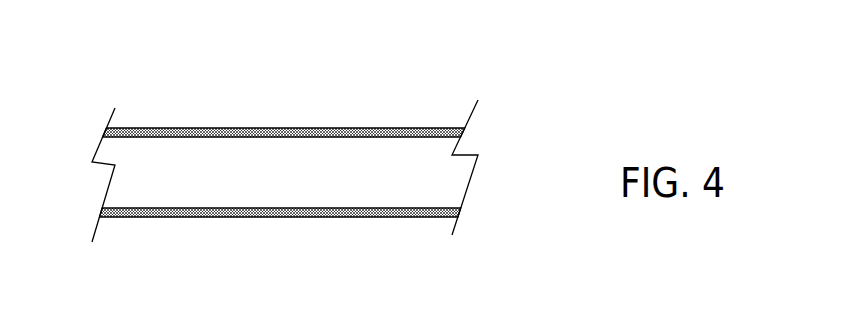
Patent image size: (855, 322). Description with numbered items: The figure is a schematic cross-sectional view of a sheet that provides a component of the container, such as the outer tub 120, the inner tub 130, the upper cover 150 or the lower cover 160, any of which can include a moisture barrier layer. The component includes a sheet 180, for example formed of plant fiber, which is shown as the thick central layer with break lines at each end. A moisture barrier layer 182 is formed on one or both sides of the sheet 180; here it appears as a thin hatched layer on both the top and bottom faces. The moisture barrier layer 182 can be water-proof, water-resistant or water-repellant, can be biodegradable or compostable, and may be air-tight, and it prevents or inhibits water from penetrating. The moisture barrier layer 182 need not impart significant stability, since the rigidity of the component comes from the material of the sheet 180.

The outer tub 120 is at (313, 162).
The inner tub 130 is at (285, 176).
The upper cover 150 is at (285, 176).
The lower cover 160 is at (285, 176).
The sheet 180 is at (273, 198).
The moisture barrier layer 182 is at (233, 128).